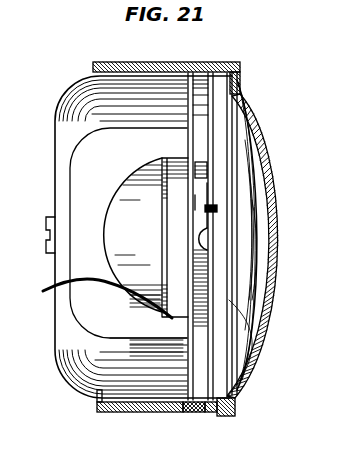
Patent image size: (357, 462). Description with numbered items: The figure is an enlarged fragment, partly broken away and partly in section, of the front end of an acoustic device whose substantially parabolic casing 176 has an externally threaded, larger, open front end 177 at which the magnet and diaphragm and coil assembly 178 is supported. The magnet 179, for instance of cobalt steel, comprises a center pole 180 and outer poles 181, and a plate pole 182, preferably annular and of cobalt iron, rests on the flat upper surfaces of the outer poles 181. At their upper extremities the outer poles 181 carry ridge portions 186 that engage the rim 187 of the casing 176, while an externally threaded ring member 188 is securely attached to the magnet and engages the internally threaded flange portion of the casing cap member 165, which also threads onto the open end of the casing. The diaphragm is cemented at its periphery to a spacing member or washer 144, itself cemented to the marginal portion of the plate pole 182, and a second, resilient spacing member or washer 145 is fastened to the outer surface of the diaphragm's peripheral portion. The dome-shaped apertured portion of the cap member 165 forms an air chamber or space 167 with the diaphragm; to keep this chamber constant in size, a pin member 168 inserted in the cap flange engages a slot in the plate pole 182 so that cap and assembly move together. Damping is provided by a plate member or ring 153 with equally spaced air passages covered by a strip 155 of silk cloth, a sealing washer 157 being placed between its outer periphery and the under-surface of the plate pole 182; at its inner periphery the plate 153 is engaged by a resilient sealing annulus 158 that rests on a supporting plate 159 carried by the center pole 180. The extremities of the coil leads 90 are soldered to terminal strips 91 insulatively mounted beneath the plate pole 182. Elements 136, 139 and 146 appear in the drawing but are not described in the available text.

The coil leads 90 is at (218, 205).
The terminal strips 91 is at (181, 258).
The mounting bracket 136 is at (48, 223).
The dome reflector 139 is at (245, 228).
The spacing member or washer 144 is at (232, 118).
The second spacing member or washer 145 is at (228, 352).
The flexible strap 146 is at (85, 280).
The plate member or ring 153 is at (195, 200).
The strip of cloth 155 is at (205, 177).
The sealing member or washer 157 is at (207, 183).
The sealing annulus or member 158 is at (166, 158).
The supporting plate or member 159 is at (163, 237).
The casing cap member 165 is at (235, 412).
The air chamber or space 167 is at (243, 323).
The pin member 168 is at (212, 410).
The casing 176 is at (105, 410).
The front end 177 is at (137, 410).
The magnet and diaphragm and coil assembly 178 is at (55, 140).
The magnet 179 is at (63, 312).
The center pole 180 is at (128, 213).
The outer poles 181 is at (130, 97).
The plate pole 182 is at (213, 330).
The ridge portions 186 is at (280, 260).
The rim 187 is at (177, 413).
The externally threaded ring member 188 is at (203, 62).